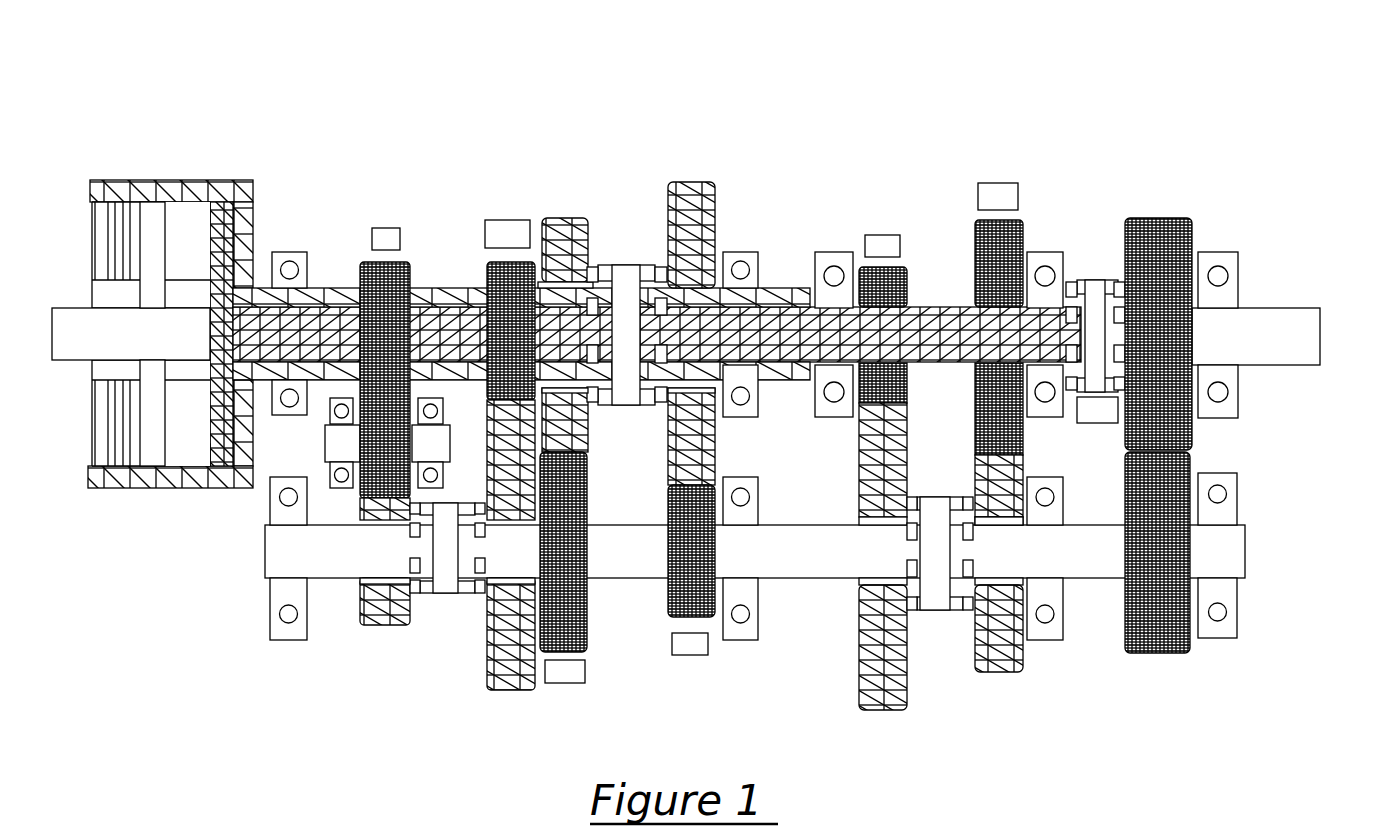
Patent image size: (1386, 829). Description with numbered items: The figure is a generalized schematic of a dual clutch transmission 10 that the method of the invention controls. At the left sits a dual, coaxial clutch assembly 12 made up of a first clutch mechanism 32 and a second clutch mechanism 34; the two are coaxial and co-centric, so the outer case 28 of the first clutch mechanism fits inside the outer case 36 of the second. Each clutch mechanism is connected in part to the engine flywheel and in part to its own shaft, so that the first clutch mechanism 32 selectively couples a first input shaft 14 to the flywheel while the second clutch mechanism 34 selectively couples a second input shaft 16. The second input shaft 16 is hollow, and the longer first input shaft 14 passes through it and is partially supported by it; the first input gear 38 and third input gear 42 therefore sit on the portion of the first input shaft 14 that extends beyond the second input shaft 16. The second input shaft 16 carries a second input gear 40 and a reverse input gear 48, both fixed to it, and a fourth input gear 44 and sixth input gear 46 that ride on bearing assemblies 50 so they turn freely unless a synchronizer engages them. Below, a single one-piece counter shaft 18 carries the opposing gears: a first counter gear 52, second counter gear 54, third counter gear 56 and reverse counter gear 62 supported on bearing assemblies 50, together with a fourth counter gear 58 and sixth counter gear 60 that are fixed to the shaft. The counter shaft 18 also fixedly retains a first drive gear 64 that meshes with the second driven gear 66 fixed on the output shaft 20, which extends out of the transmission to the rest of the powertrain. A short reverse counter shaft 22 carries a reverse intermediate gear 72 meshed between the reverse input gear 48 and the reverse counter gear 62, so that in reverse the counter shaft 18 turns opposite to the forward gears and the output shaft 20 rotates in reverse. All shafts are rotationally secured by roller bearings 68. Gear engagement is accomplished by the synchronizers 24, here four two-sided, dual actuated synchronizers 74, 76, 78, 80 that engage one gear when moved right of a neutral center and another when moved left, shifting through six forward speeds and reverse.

The dual clutch transmission 10 is at (480, 158).
The dual, coaxial clutch assembly 12 is at (202, 152).
The first input shaft 14 is at (938, 306).
The second input shaft 16 is at (325, 286).
The counter shaft 18 is at (274, 552).
The output shaft 20 is at (1312, 332).
The reverse counter shaft 22 is at (327, 452).
The synchronizers 24 is at (652, 226).
The outer case of the first clutch mechanism 28 is at (228, 242).
The first clutch mechanism 32 is at (218, 205).
The second clutch mechanism 34 is at (146, 200).
The outer case of the second clutch mechanism 36 is at (257, 226).
The first input gear 38 is at (906, 280).
The second input gear 40 is at (484, 265).
The third input gear 42 is at (1010, 236).
The fourth input gear 44 is at (588, 228).
The sixth input gear 46 is at (716, 230).
The reverse input gear 48 is at (414, 268).
The bearing assemblies 50 is at (363, 590).
The first counter gear 52 is at (860, 632).
The second counter gear 54 is at (533, 692).
The third counter gear 56 is at (990, 665).
The fourth counter gear 58 is at (588, 633).
The sixth counter gear 60 is at (667, 602).
The reverse counter gear 62 is at (362, 616).
The first drive gear 64 is at (1120, 633).
The second driven gear 66 is at (1178, 232).
The roller bearings 68 is at (760, 268).
The reverse intermediate gear 72 is at (370, 443).
The synchronizer 74 is at (628, 268).
The synchronizer 76 is at (1095, 294).
The synchronizer 78 is at (940, 612).
The synchronizer 80 is at (445, 594).